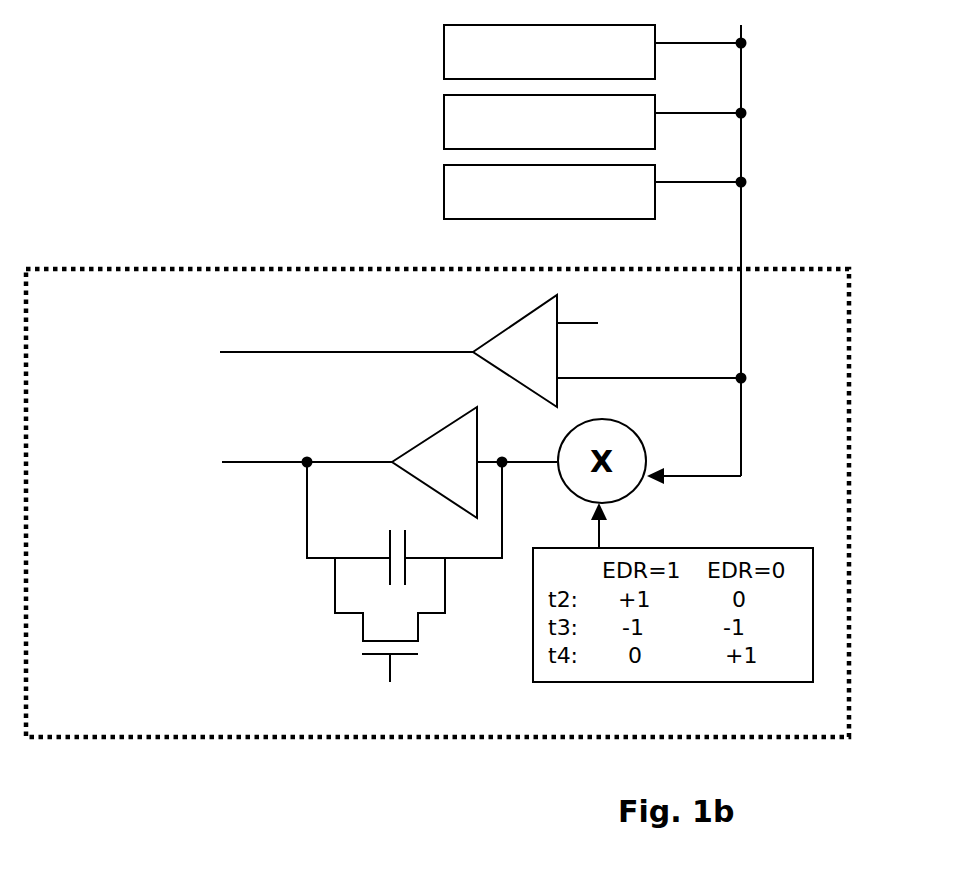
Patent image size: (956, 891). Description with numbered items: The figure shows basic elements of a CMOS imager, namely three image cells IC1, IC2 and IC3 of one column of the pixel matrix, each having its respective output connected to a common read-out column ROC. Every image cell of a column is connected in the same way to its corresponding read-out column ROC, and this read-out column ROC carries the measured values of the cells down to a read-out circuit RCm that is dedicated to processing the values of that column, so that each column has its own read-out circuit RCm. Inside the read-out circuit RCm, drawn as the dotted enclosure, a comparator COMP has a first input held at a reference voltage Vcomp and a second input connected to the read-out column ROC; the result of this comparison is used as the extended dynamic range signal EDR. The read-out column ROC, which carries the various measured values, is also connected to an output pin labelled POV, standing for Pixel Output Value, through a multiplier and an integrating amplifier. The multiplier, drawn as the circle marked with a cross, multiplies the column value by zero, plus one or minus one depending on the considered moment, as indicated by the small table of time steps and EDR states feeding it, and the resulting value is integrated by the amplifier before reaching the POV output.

The read-out column ROC is at (743, 235).
The image cell IC1 is at (592, 52).
The image cell IC2 is at (592, 122).
The image cell IC3 is at (592, 192).
The read-out circuit RCm is at (288, 737).
The comparator COMP is at (482, 315).
The reference voltage Vcomp is at (598, 308).
The extended dynamic range signal EDR is at (316, 352).
The pixel output value pin POV is at (360, 462).